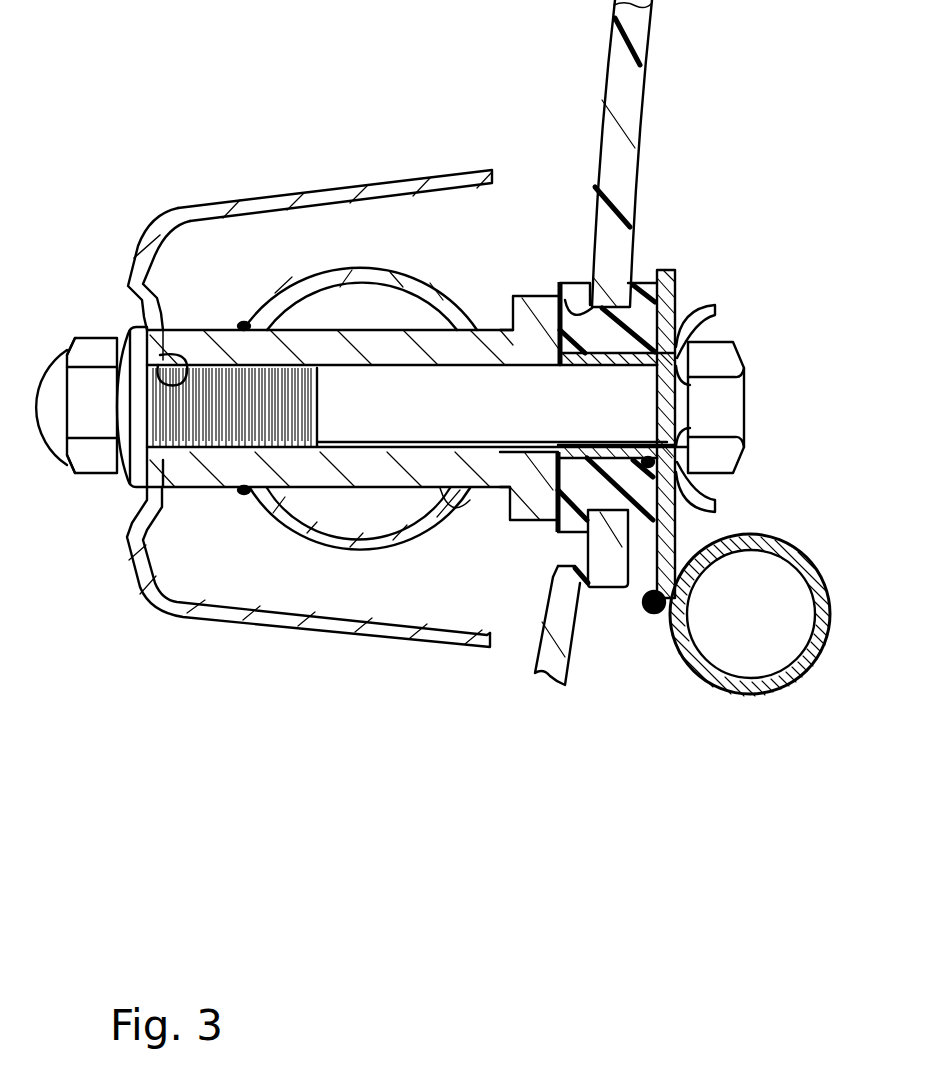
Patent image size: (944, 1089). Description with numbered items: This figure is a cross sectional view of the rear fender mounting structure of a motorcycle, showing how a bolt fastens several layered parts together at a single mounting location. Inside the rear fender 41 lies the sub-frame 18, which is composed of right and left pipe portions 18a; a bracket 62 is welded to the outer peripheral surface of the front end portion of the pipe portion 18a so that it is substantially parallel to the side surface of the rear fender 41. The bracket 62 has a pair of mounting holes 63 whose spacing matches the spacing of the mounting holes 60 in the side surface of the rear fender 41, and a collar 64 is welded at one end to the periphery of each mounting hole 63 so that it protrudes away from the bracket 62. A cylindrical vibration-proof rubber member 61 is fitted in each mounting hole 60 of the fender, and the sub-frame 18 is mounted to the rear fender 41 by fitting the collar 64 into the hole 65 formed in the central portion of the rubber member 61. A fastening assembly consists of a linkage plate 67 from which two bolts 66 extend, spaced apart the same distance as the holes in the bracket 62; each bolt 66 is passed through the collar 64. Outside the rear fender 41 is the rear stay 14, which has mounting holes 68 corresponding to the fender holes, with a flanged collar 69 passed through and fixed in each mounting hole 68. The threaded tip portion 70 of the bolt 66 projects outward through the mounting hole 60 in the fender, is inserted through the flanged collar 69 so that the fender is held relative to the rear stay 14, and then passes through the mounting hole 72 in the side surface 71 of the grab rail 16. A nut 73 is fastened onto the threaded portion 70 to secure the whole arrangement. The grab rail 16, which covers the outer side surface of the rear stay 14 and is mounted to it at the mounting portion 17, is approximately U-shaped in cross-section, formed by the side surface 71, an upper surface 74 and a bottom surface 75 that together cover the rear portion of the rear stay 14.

The rear stay 14 is at (300, 287).
The grab rail 16 is at (228, 188).
The mounting portion 17 is at (62, 322).
The sub-frame 18 is at (666, 660).
The pipe portion 18a is at (805, 556).
The rear fender 41 is at (608, 52).
The mounting hole 60 is at (557, 298).
The vibration-proof rubber member 61 is at (575, 290).
The bracket 62 is at (667, 268).
The mounting hole 63 is at (728, 378).
The collar 64 is at (618, 345).
The hole 65 is at (577, 457).
The bolt 66 is at (730, 411).
The linkage plate 67 is at (713, 502).
The mounting hole 68 is at (473, 333).
The flanged collar 69 is at (200, 486).
The threaded tip portion 70 is at (188, 430).
The side surface 71 is at (127, 268).
The mounting hole 72 is at (182, 360).
The nut 73 is at (50, 433).
The upper surface 74 is at (340, 187).
The bottom surface 75 is at (230, 617).